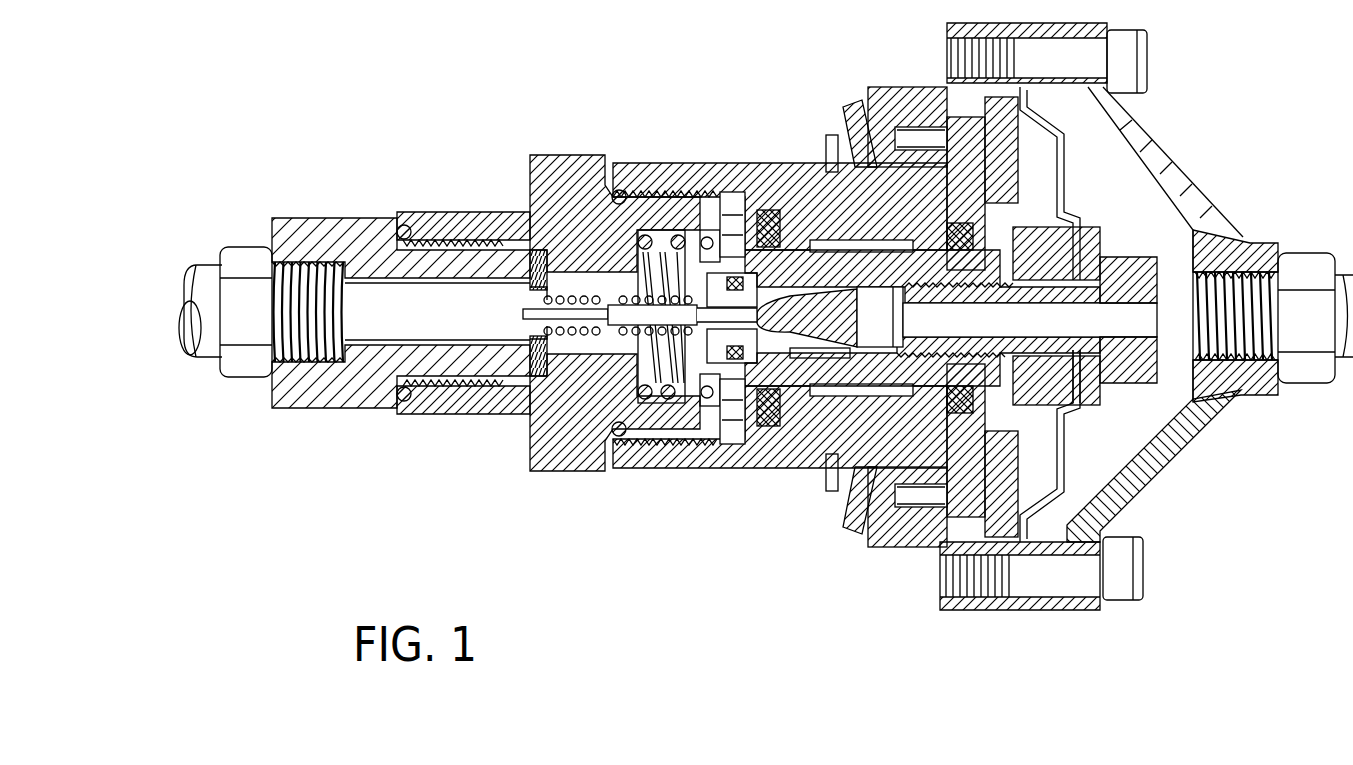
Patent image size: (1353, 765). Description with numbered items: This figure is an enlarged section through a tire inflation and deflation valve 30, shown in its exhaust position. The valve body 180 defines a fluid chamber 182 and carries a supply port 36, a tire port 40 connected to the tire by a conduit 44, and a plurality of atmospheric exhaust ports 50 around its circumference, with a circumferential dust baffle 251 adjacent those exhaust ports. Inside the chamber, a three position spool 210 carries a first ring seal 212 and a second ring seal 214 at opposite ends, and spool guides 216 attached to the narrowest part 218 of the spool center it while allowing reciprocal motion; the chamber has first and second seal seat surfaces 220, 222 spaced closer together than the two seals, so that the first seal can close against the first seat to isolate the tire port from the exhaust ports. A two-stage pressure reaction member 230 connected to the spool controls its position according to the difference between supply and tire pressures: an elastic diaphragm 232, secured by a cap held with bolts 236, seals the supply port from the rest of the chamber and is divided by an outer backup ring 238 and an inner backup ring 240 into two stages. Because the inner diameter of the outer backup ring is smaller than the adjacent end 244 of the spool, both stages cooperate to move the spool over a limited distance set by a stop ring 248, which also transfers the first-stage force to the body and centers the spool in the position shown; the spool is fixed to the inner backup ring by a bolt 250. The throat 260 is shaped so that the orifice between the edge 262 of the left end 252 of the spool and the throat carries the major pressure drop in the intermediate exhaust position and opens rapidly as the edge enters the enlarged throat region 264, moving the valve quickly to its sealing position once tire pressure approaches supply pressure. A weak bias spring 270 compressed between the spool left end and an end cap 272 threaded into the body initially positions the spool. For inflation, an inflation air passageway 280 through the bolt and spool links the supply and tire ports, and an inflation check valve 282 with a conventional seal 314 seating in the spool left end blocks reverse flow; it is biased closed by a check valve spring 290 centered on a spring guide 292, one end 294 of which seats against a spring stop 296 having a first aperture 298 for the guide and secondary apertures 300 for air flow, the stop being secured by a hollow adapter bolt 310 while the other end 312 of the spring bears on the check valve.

The tire inflation and deflation valve 30 is at (1213, 542).
The supply port 36 is at (1193, 355).
The tire port 40 is at (360, 275).
The conduit 44 is at (207, 265).
The atmospheric exhaust ports 50 is at (905, 127).
The valve body 180 is at (622, 190).
The fluid chamber 182 is at (945, 115).
The three position spool 210 is at (807, 402).
The first ring seal 212 is at (763, 415).
The second ring seal 214 is at (927, 520).
The spool guides 216 is at (822, 210).
The narrowest part of the spool 218 is at (832, 458).
The first seal seat surface 220 is at (800, 212).
The second seal seat surface 222 is at (955, 230).
The two-stage pressure reaction member 230 is at (1120, 176).
The elastic diaphragm 232 is at (1068, 140).
The bolts 236 is at (1147, 62).
The outer backup ring 238 is at (1072, 160).
The inner backup ring 240 is at (1078, 230).
The adjacent end of the spool 244 is at (1063, 427).
The stop ring 248 is at (1052, 453).
The bolt 250 is at (1197, 240).
The circumferential dust baffle 251 is at (848, 110).
The left end of the spool 252 is at (732, 200).
The throat 260 is at (768, 212).
The edge of the spool left end 262 is at (733, 402).
The enlarged throat region 264 is at (710, 232).
The weak bias spring 270 is at (665, 405).
The end cap 272 is at (450, 212).
The inflation air passageway 280 is at (1003, 304).
The inflation check valve 282 is at (860, 304).
The check valve spring 290 is at (530, 430).
The spring guide 292 is at (523, 314).
The one end of the check valve spring 294 is at (552, 295).
The spring stop 296 is at (525, 296).
The first aperture 298 is at (525, 328).
The secondary apertures 300 is at (535, 250).
The hollow adapter bolt 310 is at (335, 408).
The other end of the check valve spring 312 is at (652, 316).
The seal 314 is at (700, 404).